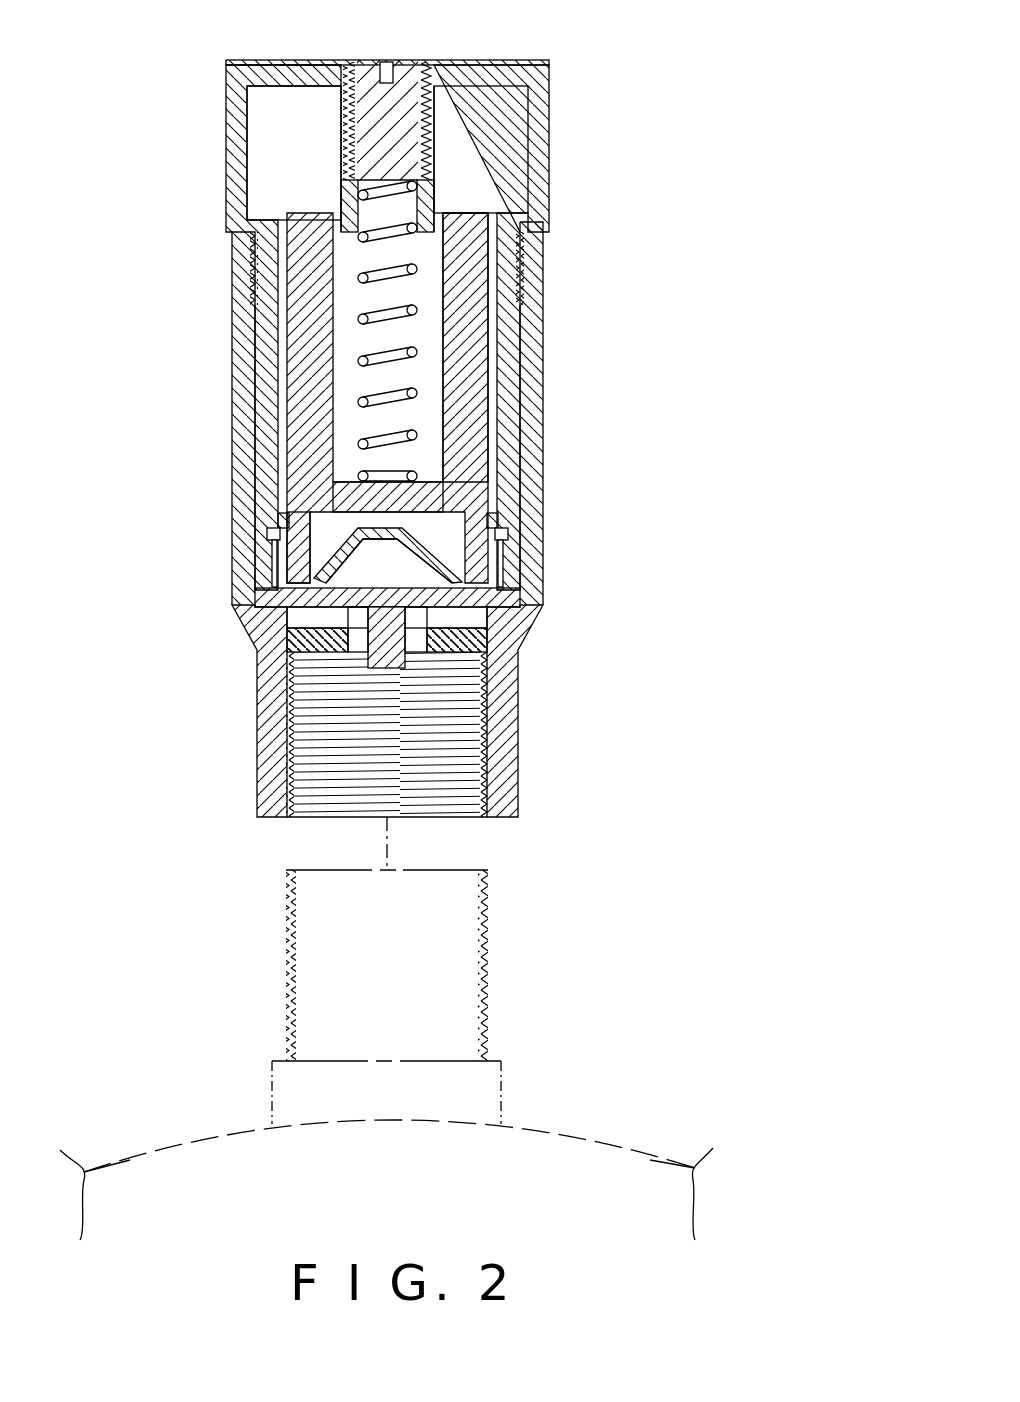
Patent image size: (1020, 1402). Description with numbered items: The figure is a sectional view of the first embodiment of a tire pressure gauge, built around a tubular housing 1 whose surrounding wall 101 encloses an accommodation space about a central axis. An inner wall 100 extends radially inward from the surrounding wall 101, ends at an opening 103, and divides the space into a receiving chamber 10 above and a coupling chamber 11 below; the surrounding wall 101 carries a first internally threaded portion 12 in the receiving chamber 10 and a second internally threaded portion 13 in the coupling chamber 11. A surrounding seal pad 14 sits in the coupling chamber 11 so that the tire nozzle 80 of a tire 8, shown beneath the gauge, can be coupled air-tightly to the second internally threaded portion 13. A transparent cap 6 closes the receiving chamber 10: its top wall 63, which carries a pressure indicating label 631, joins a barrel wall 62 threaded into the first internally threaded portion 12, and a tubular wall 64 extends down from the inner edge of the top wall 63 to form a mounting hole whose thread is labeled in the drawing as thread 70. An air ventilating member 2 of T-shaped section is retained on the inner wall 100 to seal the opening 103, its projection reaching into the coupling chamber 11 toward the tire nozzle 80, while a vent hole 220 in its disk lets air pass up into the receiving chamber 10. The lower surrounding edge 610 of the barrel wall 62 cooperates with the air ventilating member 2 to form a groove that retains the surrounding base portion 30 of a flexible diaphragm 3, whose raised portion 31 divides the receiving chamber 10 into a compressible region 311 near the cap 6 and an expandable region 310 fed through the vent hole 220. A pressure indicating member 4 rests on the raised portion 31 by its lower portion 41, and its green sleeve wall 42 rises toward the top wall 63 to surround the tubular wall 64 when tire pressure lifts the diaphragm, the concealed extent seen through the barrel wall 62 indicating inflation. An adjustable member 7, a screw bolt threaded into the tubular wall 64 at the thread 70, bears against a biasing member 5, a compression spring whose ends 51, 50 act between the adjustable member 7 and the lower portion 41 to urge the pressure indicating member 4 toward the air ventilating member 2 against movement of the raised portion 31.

The tubular housing 1 is at (257, 722).
The air ventilating member 2 is at (262, 598).
The flexible diaphragm 3 is at (453, 503).
The pressure indicating member 4 is at (512, 226).
The biasing member 5 is at (388, 278).
The cap 6 is at (549, 168).
The adjustable member 7 is at (404, 87).
The tire 8 is at (636, 1152).
The receiving chamber 10 is at (493, 373).
The coupling chamber 11 is at (302, 782).
The first internally threaded portion 12 is at (522, 257).
The second internally threaded portion 13 is at (485, 765).
The surrounding seal pad 14 is at (460, 643).
The surrounding base portion 30 is at (510, 560).
The raised portion 31 is at (483, 530).
The lower portion 41 is at (477, 518).
The sleeve wall 42 is at (467, 337).
The end of biasing member 50 is at (425, 468).
The end of biasing member 51 is at (434, 198).
The barrel wall 62 is at (232, 173).
The top wall 63 is at (285, 67).
The tubular wall 64 is at (428, 103).
The screw thread 70 is at (434, 125).
The tire nozzle 80 is at (490, 1080).
The inner wall 100 is at (302, 618).
The surrounding wall 101 is at (243, 376).
The opening 103 is at (305, 637).
The vent hole 220 is at (430, 620).
The expandable region 310 is at (372, 568).
The compressible region 311 is at (325, 522).
The lower surrounding edge 610 is at (268, 540).
The pressure indicating label 631 is at (330, 62).